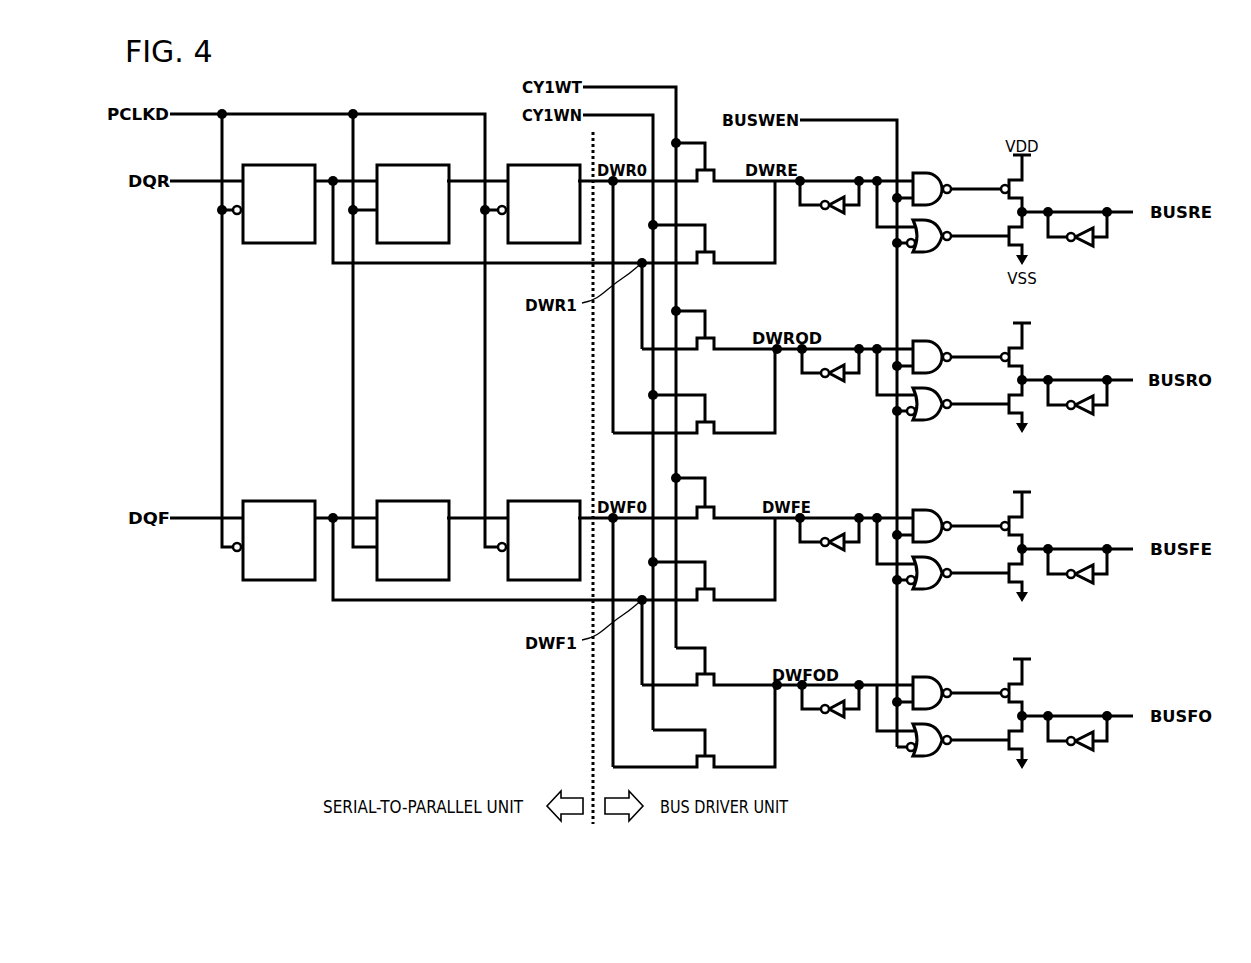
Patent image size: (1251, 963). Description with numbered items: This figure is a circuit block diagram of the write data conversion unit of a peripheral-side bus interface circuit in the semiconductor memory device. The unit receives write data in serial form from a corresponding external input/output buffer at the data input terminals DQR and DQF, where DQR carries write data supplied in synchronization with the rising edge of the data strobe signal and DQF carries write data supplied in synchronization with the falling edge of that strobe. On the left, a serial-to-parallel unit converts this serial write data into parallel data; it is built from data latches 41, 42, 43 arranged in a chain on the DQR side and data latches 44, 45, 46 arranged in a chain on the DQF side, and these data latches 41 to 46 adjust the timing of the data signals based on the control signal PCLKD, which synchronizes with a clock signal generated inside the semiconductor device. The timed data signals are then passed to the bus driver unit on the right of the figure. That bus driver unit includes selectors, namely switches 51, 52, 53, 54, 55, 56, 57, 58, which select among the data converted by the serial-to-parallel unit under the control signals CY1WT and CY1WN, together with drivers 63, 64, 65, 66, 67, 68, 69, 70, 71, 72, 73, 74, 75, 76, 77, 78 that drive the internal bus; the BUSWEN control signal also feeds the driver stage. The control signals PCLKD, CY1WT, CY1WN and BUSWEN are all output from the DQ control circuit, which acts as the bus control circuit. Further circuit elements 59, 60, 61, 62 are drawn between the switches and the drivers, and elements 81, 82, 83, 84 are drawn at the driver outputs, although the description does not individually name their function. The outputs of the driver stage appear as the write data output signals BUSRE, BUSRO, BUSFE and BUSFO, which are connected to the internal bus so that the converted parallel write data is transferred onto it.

The data latch 41 is at (262, 165).
The data latch 42 is at (396, 165).
The data latch 43 is at (527, 166).
The data latch 44 is at (258, 501).
The data latch 45 is at (392, 501).
The data latch 46 is at (518, 501).
The switch 51 is at (708, 170).
The switch 52 is at (708, 252).
The switch 53 is at (708, 338).
The switch 54 is at (708, 422).
The switch 55 is at (708, 507).
The switch 56 is at (708, 589).
The switch 57 is at (708, 674).
The switch 58 is at (708, 756).
The inverter 59 is at (828, 213).
The inverter 60 is at (826, 384).
The inverter 61 is at (826, 553).
The inverter 62 is at (826, 720).
The driver 63 is at (920, 173).
The driver 64 is at (928, 250).
The driver 65 is at (1026, 190).
The driver 66 is at (1024, 238).
The driver 67 is at (920, 341).
The driver 68 is at (928, 418).
The driver 69 is at (1026, 358).
The driver 70 is at (1024, 406).
The driver 71 is at (920, 510).
The driver 72 is at (928, 587).
The driver 73 is at (1026, 527).
The driver 74 is at (1024, 575).
The driver 75 is at (920, 677).
The driver 76 is at (928, 754).
The driver 77 is at (1026, 694).
The driver 78 is at (1024, 742).
The inverter 81 is at (1086, 249).
The inverter 82 is at (1086, 417).
The inverter 83 is at (1086, 586).
The inverter 84 is at (1086, 753).